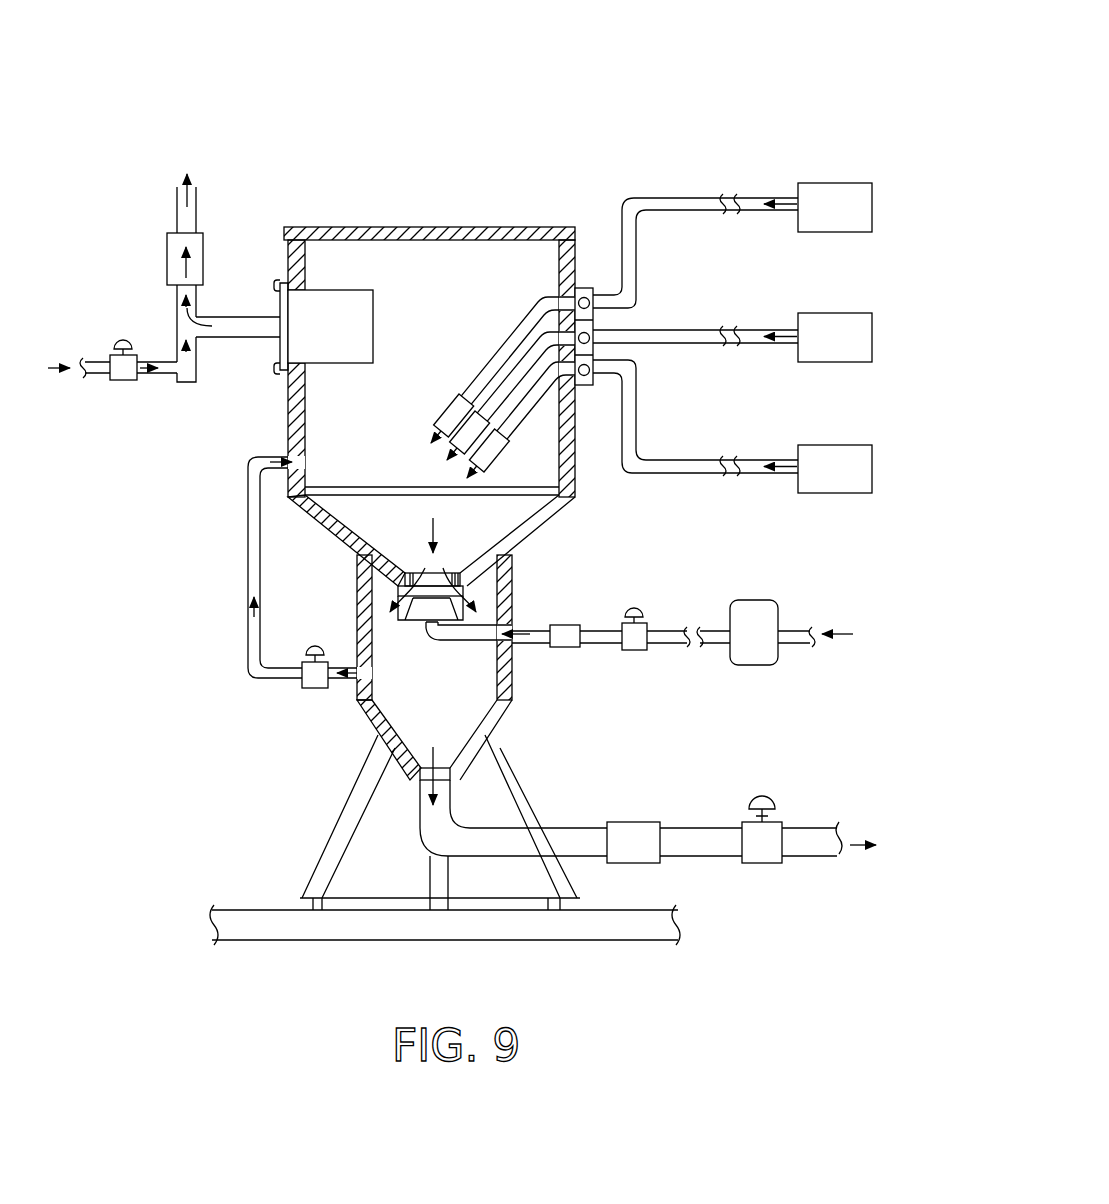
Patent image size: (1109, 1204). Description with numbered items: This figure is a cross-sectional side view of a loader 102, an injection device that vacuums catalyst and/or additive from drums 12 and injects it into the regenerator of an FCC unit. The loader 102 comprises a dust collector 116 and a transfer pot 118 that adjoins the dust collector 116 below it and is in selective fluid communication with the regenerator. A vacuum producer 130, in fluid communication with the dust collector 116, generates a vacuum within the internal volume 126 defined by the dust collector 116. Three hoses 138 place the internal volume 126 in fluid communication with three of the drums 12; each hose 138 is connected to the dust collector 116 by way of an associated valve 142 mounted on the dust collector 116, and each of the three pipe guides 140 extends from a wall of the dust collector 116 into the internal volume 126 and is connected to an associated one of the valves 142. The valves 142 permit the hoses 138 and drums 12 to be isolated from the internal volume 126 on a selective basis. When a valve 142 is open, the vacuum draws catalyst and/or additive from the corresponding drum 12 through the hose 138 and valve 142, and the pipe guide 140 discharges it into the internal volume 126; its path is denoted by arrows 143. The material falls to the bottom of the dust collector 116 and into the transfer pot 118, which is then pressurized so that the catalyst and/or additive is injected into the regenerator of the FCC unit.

The loader 102 is at (621, 89).
The dust collector 116 is at (453, 223).
The internal volume 126 is at (372, 258).
The vacuum producer 130 is at (203, 258).
The pipe guide 140 is at (488, 408).
The valve 142 is at (584, 289).
The hose 138 is at (670, 197).
The drum 12 is at (823, 183).
The transfer pot 118 is at (514, 579).
The arrows 143 is at (467, 478).